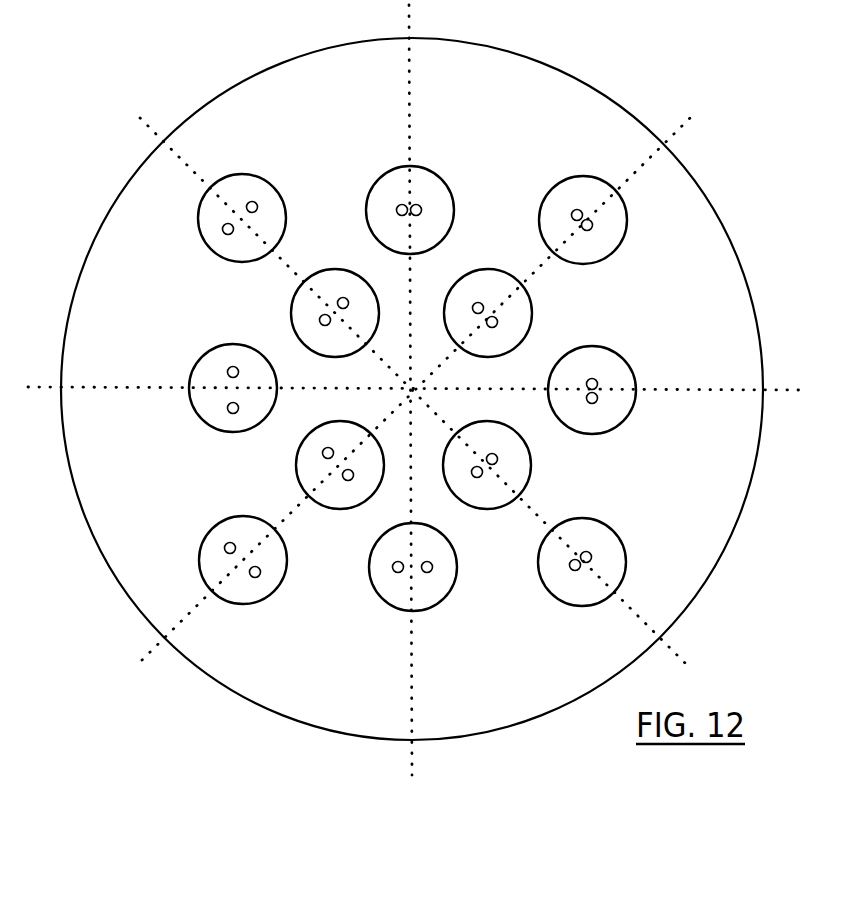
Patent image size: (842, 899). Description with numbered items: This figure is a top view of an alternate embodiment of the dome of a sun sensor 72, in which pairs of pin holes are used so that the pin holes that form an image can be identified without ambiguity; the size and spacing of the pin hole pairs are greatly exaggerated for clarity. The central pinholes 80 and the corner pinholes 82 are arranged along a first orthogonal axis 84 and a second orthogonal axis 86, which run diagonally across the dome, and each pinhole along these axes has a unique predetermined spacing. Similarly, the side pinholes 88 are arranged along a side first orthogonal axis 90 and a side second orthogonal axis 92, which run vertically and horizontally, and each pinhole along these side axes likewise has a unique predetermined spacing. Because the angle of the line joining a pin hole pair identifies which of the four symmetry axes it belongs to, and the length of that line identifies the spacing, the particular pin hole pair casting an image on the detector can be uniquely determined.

The sun sensor 72 is at (737, 233).
The central pinholes 80 is at (532, 310).
The corner pinholes 82 is at (280, 197).
The first orthogonal axis 84 is at (158, 133).
The second orthogonal axis 86 is at (673, 130).
The side pinholes 88 is at (448, 183).
The side first orthogonal axis 90 is at (408, 25).
The side second orthogonal axis 92 is at (52, 387).